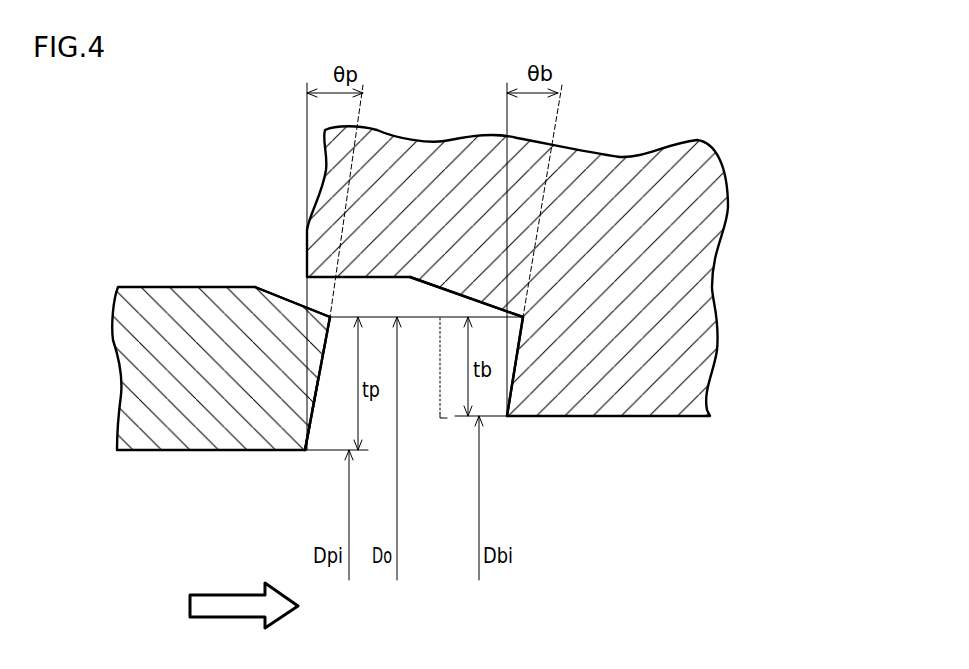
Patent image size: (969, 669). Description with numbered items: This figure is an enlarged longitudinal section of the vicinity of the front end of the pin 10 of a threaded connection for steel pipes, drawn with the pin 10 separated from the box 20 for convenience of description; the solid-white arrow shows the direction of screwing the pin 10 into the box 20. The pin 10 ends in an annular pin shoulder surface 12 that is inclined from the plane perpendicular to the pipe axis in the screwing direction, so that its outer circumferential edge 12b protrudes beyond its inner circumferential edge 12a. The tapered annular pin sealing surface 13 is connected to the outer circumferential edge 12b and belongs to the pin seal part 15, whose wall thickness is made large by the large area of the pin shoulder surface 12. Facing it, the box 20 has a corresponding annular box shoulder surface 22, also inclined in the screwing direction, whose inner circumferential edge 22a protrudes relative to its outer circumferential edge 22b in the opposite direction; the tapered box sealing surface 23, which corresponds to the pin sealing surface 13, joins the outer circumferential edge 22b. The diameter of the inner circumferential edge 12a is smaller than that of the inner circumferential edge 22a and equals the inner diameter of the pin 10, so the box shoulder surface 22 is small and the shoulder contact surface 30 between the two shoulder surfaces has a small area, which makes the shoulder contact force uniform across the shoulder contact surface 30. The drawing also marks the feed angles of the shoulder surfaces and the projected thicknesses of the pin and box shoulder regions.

The pin 10 is at (120, 463).
The pin shoulder surface 12 is at (322, 390).
The inner circumferential edge of the pin shoulder surface 12a is at (306, 453).
The outer circumferential edge of the pin shoulder surface 12b is at (330, 317).
The pin sealing surface 13 is at (323, 310).
The pin seal part 15 is at (302, 423).
The box 20 is at (670, 435).
The box shoulder surface 22 is at (508, 374).
The inner circumferential edge of the box shoulder surface 22a is at (505, 418).
The outer circumferential edge of the box shoulder surface 22b is at (523, 317).
The box sealing surface 23 is at (518, 316).
The shoulder contact surface 30 is at (440, 368).